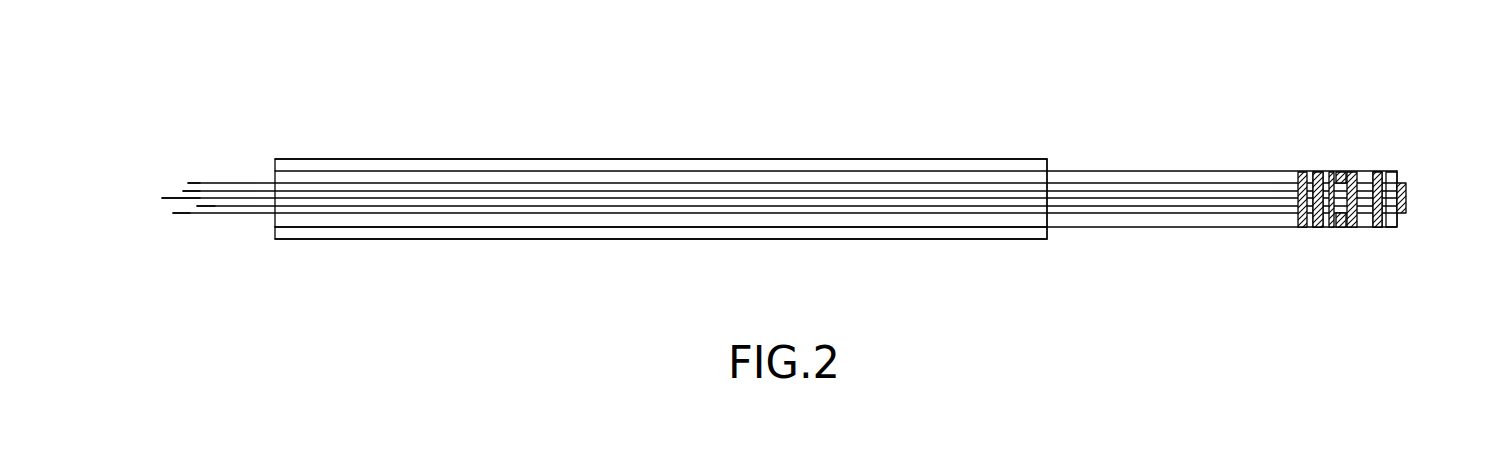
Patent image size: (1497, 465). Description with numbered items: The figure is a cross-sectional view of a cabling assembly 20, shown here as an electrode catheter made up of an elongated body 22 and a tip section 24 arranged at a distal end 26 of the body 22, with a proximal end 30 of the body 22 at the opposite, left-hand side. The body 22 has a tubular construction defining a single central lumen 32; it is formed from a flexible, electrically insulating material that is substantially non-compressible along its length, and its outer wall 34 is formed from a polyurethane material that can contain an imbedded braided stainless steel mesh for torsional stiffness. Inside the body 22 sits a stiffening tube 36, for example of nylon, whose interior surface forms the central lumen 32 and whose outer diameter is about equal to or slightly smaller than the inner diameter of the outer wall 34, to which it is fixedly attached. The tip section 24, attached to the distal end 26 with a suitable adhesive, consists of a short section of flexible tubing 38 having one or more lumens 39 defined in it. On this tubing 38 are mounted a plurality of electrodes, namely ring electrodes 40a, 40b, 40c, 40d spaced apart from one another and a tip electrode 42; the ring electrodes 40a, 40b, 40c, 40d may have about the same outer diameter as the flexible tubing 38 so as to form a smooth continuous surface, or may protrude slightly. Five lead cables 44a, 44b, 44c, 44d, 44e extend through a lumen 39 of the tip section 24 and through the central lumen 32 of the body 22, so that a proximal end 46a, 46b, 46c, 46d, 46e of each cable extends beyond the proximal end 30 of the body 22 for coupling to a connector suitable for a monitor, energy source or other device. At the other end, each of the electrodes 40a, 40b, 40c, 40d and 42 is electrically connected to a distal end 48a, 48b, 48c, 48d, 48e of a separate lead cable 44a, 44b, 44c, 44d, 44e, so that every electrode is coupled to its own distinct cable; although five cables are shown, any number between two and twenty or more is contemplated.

The cabling assembly 20 is at (306, 102).
The elongated body 22 is at (715, 138).
The tip section 24 is at (1261, 152).
The distal end 26 is at (1050, 239).
The proximal end 30 is at (275, 231).
The central lumen 32 is at (632, 220).
The outer wall 34 is at (512, 240).
The stiffening tube 36 is at (540, 172).
The flexible tubing 38 is at (1193, 172).
The lumen 39 is at (1133, 178).
The ring electrode 40a is at (1303, 215).
The ring electrode 40b is at (1327, 220).
The ring electrode 40c is at (1353, 215).
The ring electrode 40d is at (1383, 217).
The tip electrode 42 is at (1406, 190).
The lead cable 44a is at (215, 213).
The lead cable 44b is at (228, 206).
The lead cable 44c is at (245, 191).
The lead cable 44d is at (250, 183).
The lead cable 44e is at (235, 198).
The proximal end of lead cable 46a is at (172, 214).
The proximal end of lead cable 46b is at (197, 207).
The proximal end of lead cable 46c is at (207, 183).
The proximal end of lead cable 46d is at (217, 191).
The proximal end of lead cable 46e is at (185, 191).
The distal end of lead cable 48a is at (1295, 215).
The distal end of lead cable 48b is at (1320, 213).
The distal end of lead cable 48c is at (1347, 172).
The distal end of lead cable 48d is at (1368, 172).
The distal end of lead cable 48e is at (1316, 195).